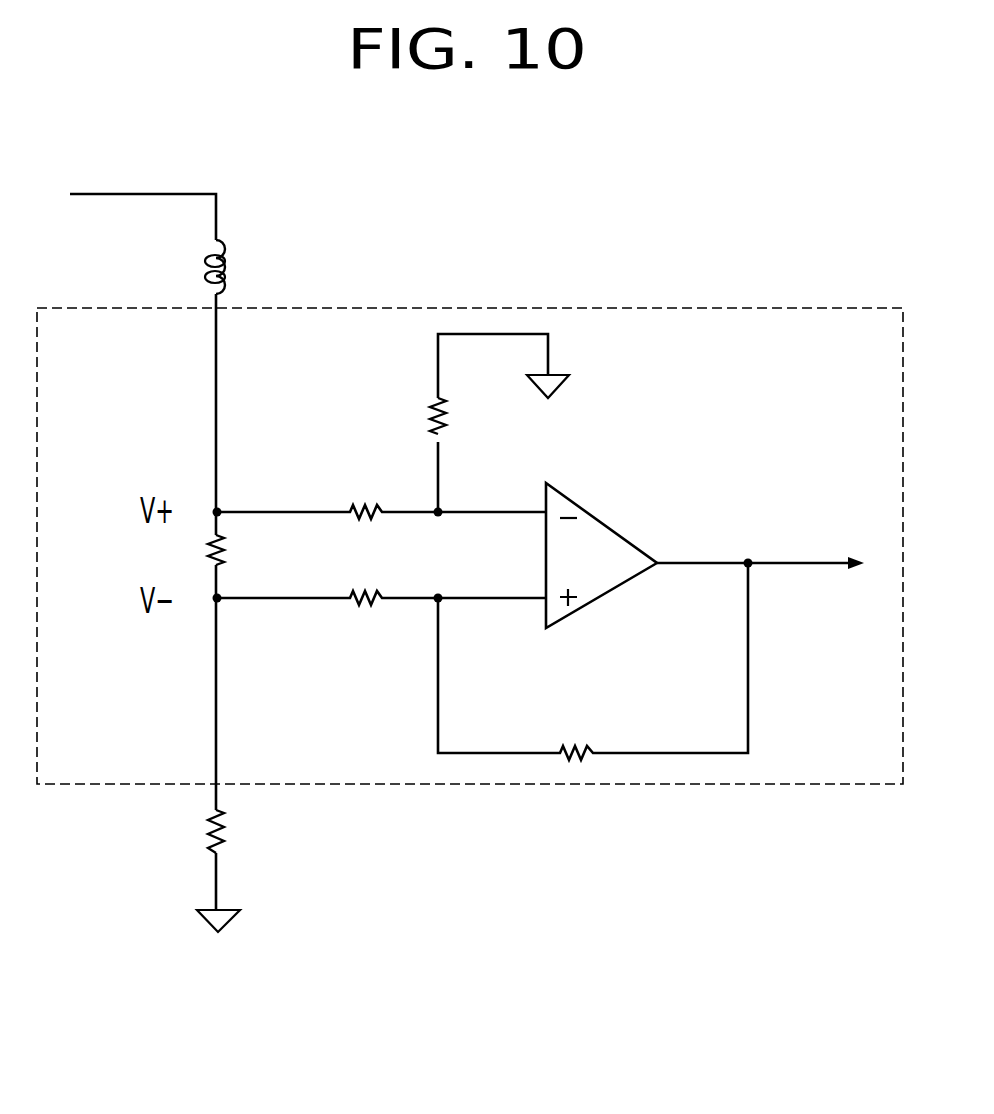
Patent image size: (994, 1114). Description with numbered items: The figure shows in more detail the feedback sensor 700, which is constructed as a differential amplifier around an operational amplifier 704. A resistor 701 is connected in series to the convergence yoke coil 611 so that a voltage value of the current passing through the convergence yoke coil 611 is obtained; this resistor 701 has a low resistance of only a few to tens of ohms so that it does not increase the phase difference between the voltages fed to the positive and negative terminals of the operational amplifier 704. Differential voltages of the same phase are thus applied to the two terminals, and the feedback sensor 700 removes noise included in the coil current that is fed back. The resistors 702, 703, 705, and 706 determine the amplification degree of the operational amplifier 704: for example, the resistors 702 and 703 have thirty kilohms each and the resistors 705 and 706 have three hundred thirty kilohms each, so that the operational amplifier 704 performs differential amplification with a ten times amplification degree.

The feedback sensor 700 is at (680, 308).
The convergence yoke coil 611 is at (236, 268).
The resistor 701 is at (222, 548).
The resistor 702 is at (352, 503).
The resistor 703 is at (351, 612).
The operational amplifier 704 is at (601, 520).
The resistor 705 is at (571, 761).
The resistor 706 is at (448, 432).